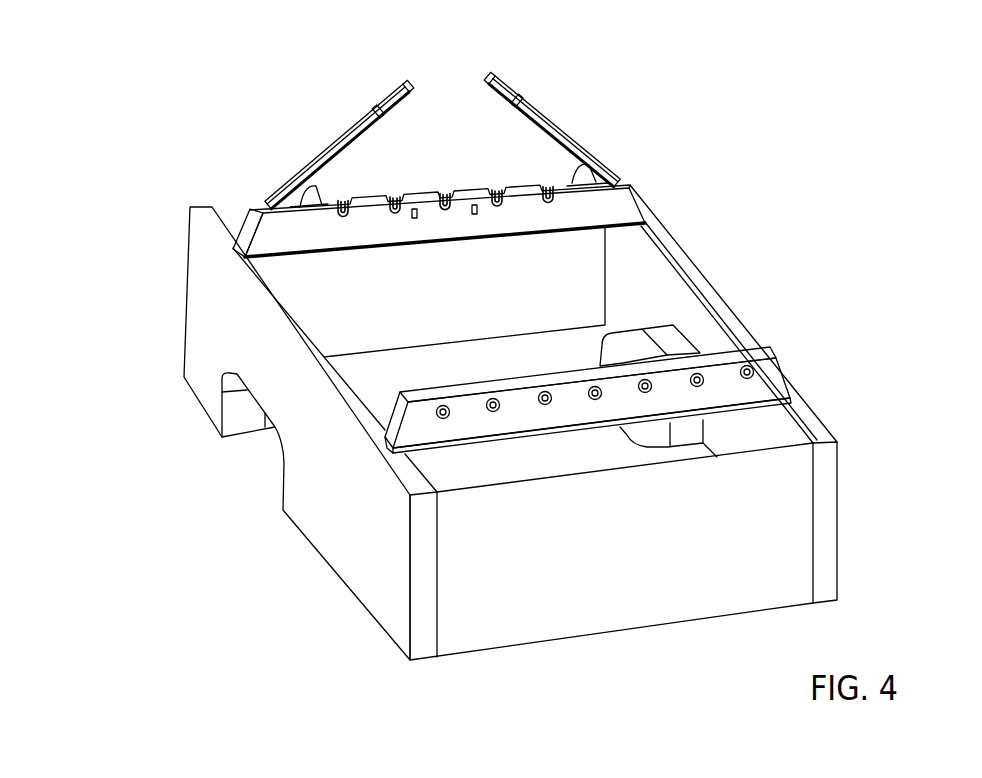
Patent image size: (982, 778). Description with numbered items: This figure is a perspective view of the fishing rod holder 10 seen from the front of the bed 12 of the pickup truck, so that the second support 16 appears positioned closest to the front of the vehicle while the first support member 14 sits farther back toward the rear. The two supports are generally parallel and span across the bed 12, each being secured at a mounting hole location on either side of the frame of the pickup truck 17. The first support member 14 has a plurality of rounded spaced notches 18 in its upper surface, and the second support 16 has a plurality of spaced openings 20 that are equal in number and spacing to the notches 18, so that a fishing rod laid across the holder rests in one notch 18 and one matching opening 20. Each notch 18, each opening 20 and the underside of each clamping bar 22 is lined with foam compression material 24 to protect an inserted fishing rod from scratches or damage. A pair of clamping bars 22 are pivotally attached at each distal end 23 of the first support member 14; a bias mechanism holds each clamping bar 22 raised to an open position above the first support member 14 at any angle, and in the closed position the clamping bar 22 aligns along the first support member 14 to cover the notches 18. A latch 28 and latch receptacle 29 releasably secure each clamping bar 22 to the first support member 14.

The fishing rod holder 10 is at (678, 197).
The bed of a pickup truck 12 is at (457, 378).
The first support member 14 is at (240, 240).
The second support 16 is at (518, 410).
The frame of the pickup truck 17 is at (358, 515).
The rounded spaced notches 18 is at (440, 195).
The spaced openings 20 is at (751, 366).
The clamping bars 22 is at (571, 148).
The distal end 23 is at (631, 183).
The foam compression material 24 is at (545, 397).
The latch 28 is at (365, 110).
The latch receptacle 29 is at (473, 213).